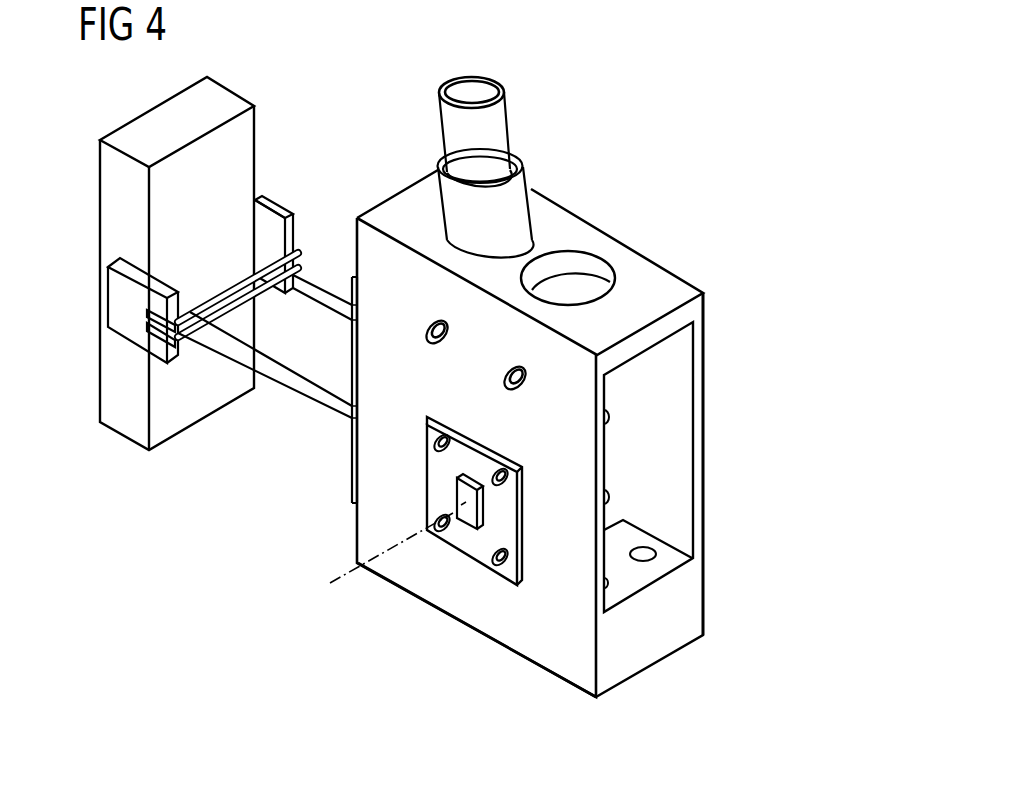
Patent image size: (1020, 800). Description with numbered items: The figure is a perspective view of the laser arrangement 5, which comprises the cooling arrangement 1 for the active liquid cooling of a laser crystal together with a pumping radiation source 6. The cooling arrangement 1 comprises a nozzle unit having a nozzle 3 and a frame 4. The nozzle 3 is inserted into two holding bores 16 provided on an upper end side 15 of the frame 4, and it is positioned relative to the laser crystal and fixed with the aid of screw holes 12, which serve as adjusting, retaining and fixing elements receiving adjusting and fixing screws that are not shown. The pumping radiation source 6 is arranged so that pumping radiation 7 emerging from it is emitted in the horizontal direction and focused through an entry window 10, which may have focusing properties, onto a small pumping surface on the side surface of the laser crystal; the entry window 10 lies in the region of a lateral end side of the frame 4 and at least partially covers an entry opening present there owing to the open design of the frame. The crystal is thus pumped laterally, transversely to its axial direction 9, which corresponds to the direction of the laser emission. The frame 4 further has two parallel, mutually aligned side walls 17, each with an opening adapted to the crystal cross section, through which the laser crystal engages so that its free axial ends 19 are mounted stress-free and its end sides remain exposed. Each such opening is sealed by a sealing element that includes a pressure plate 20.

The cooling arrangement 1 is at (750, 366).
The nozzle 3 is at (500, 125).
The frame 4 is at (640, 256).
The laser arrangement 5 is at (312, 88).
The pumping radiation source 6 is at (170, 120).
The pumping radiation 7 is at (298, 382).
The axial direction 9 is at (335, 580).
The entry window 10 is at (352, 438).
The screw holes 12 is at (507, 382).
The upper end side 15 is at (660, 285).
The holding bores 16 is at (577, 287).
The side walls 17 is at (698, 480).
The free axial ends 19 is at (456, 495).
The pressure plate 20 is at (467, 543).